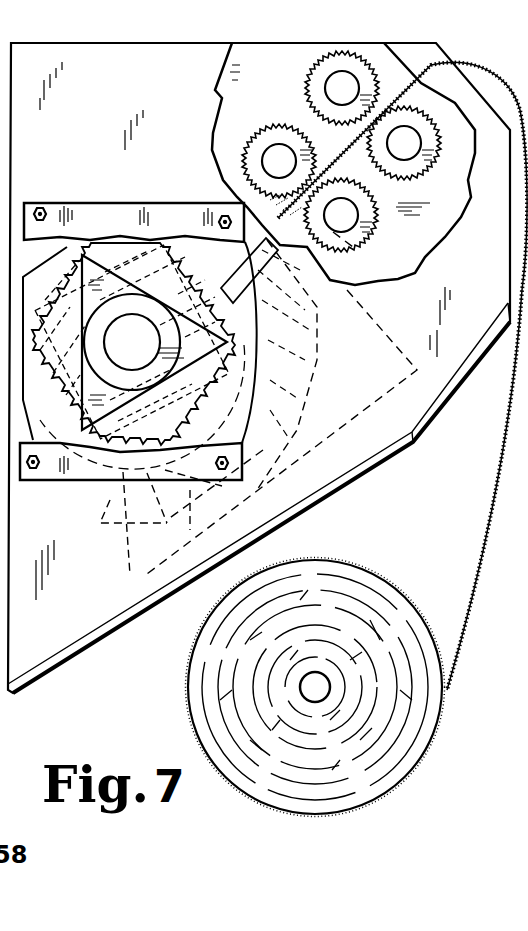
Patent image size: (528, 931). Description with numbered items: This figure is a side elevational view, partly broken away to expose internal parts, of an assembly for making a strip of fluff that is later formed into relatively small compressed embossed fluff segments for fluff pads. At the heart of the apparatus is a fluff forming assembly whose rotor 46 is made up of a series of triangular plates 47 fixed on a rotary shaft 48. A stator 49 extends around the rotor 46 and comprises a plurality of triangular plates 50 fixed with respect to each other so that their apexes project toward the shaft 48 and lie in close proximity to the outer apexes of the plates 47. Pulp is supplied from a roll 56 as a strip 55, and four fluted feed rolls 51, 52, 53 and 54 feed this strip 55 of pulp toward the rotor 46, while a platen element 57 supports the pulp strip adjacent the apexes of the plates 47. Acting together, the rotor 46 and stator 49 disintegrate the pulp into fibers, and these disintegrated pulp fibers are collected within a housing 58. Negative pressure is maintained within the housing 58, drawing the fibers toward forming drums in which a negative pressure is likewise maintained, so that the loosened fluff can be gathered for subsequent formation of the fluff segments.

The rotor 46 is at (82, 257).
The triangular plates 47 is at (83, 413).
The rotary shaft 48 is at (148, 339).
The stator 49 is at (157, 514).
The triangular plates 50 is at (310, 388).
The fluted feed roll 51 is at (304, 79).
The fluted feed roll 52 is at (418, 169).
The fluted feed roll 53 is at (262, 138).
The fluted feed roll 54 is at (356, 241).
The strip of pulp 55 is at (497, 490).
The roll of pulp 56 is at (377, 576).
The platen element 57 is at (231, 273).
The housing 58 is at (72, 660).